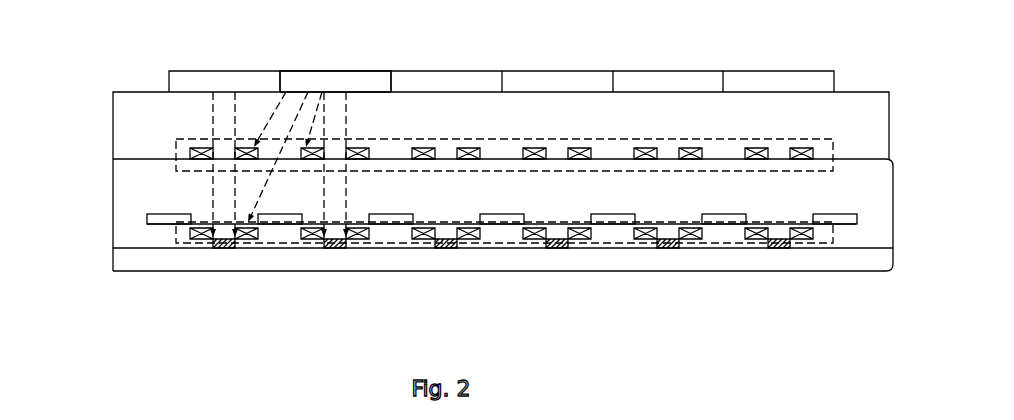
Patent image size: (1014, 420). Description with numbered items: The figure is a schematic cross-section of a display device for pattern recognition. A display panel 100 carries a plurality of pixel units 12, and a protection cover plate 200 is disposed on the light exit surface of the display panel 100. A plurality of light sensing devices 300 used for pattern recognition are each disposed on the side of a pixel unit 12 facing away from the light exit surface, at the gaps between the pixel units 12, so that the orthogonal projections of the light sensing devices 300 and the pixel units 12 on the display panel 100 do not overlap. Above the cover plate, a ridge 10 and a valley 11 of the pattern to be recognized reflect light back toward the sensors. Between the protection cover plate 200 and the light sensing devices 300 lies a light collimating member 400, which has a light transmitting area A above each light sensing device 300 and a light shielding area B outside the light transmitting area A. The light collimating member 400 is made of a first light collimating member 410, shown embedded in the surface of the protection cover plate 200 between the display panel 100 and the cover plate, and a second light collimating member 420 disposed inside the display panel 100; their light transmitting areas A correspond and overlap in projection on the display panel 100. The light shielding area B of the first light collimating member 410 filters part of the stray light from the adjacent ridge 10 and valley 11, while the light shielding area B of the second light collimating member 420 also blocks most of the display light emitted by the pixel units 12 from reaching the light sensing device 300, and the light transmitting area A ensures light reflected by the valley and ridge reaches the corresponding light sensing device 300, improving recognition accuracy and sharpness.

The ridge 10 is at (241, 83).
The valley 11 is at (330, 83).
The pixel unit 12 is at (157, 222).
The display panel 100 is at (894, 160).
The protection cover plate 200 is at (852, 125).
The light sensing device 300 is at (778, 247).
The light collimating member 400 is at (428, 193).
The first light collimating member 410 is at (176, 149).
The second light collimating member 420 is at (453, 235).
The light transmitting area A is at (557, 230).
The light shielding area B is at (533, 233).